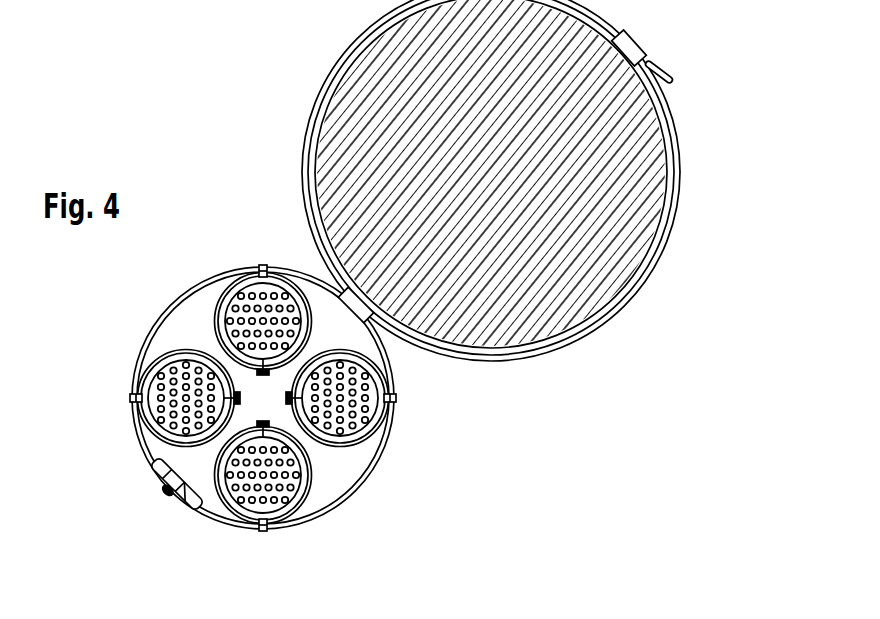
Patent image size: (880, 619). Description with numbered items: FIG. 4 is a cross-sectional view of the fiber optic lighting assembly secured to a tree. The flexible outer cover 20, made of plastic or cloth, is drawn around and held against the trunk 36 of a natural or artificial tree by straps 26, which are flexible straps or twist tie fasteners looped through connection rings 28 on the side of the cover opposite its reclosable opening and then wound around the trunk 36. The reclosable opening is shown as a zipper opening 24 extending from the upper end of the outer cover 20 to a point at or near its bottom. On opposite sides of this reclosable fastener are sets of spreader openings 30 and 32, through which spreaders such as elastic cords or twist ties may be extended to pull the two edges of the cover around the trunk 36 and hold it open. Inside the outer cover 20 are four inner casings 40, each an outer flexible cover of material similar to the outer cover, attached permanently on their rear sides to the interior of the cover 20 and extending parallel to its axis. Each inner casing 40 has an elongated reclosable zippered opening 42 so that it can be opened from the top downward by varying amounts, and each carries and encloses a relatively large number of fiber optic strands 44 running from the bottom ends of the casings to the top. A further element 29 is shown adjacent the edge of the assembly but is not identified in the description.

The outer cover 20 is at (382, 458).
The zipper opening 24 is at (167, 497).
The straps 26 is at (550, 350).
The connection rings 28 is at (343, 292).
The lid clasp 29 is at (640, 50).
The spreader openings 30 is at (157, 463).
The spreader openings 32 is at (193, 510).
The trunk 36 is at (502, 183).
The inner casings 40 is at (330, 445).
The zippered openings 42 is at (213, 357).
The fiber optic strands 44 is at (183, 357).